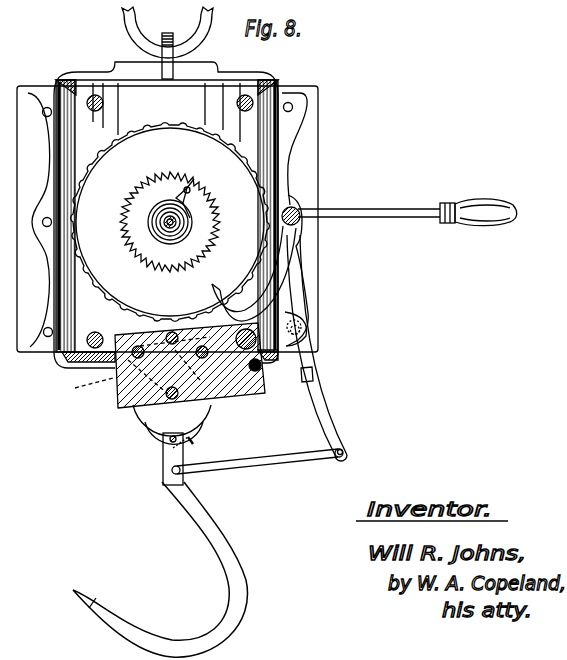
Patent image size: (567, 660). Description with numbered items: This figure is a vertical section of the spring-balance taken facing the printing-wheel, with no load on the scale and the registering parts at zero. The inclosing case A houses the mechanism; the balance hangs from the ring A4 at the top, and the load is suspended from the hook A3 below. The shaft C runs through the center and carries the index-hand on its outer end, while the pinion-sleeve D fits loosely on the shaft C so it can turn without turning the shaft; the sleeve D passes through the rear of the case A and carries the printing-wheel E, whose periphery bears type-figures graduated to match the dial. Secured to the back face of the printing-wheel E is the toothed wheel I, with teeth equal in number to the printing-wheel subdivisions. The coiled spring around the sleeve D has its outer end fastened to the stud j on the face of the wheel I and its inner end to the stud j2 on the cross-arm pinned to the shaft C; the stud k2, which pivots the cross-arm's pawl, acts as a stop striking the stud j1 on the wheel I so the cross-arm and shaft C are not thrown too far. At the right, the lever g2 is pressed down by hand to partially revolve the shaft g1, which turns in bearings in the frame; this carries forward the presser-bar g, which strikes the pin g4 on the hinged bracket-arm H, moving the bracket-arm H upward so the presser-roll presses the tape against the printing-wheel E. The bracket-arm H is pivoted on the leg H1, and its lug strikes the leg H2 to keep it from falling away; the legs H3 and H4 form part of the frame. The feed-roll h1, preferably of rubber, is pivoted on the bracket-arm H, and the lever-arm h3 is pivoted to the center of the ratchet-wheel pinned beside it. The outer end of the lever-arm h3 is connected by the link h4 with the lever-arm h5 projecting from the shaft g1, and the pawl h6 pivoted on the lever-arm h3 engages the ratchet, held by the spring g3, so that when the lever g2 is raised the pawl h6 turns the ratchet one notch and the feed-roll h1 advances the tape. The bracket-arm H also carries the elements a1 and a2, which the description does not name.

The inclosing case A is at (282, 130).
The hook A3 is at (214, 534).
The ring A4 is at (128, 32).
The printing-wheel E is at (170, 222).
The toothed wheel I is at (150, 255).
The shaft C is at (166, 224).
The pinion-sleeve D is at (180, 226).
The stud j is at (178, 197).
The stud j1 is at (190, 190).
The stud j2 is at (190, 218).
The stud k2 is at (192, 183).
The presser-bar g is at (288, 400).
The shaft g1 is at (300, 212).
The lever g2 is at (380, 210).
The spring g3 is at (185, 463).
The pin g4 is at (259, 367).
The bracket-arm H is at (122, 400).
The leg H1 is at (257, 335).
The leg H2 is at (72, 360).
The leg H3 is at (238, 102).
The leg H4 is at (100, 103).
The block pin a1 is at (176, 336).
The block pin a2 is at (206, 349).
The feed-roll h1 is at (172, 424).
The lever-arm h3 is at (165, 465).
The link h4 is at (267, 460).
The lever-arm h5 is at (326, 410).
The pawl h6 is at (192, 435).